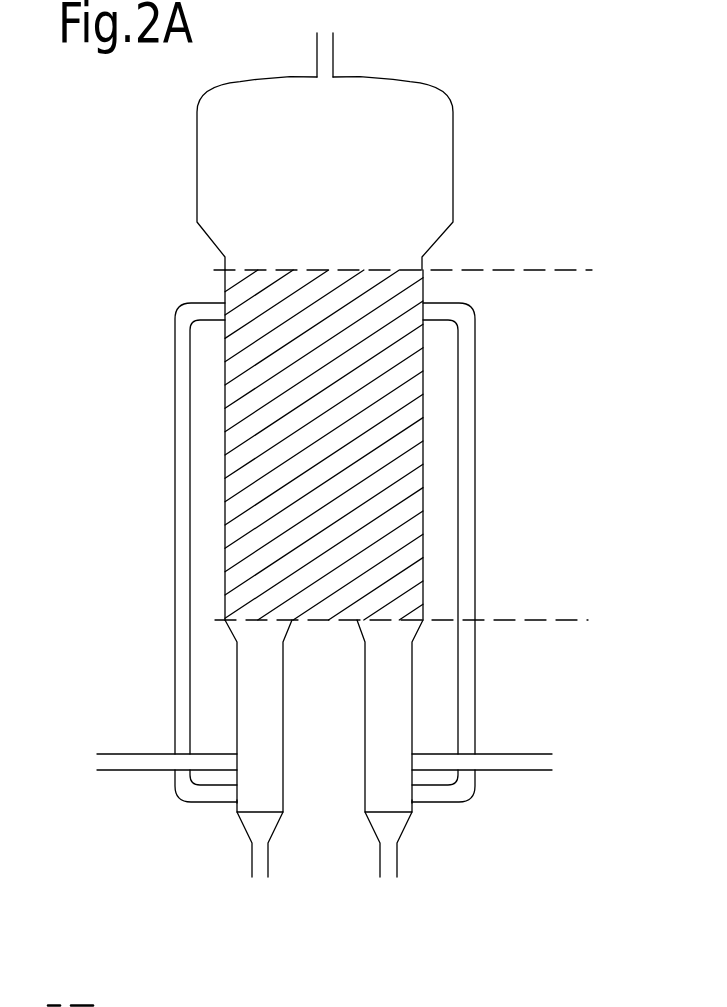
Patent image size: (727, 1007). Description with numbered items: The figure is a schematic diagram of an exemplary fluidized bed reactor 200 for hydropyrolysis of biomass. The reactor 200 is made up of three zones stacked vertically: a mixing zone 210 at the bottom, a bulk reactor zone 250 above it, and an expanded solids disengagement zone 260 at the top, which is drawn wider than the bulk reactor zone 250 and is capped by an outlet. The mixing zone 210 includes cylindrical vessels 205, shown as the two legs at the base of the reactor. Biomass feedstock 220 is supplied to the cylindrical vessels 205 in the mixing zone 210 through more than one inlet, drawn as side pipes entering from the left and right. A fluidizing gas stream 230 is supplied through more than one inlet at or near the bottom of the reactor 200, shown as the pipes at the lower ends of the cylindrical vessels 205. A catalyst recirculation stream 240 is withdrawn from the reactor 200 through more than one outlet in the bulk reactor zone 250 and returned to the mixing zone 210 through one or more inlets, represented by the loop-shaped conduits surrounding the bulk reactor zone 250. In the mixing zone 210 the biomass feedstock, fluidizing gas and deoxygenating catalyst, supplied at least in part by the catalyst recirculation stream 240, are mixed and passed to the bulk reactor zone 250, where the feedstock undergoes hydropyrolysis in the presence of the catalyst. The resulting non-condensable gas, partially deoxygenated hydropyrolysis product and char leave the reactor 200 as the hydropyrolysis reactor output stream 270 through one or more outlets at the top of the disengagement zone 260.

The fluidized bed reactor 200 is at (100, 236).
The cylindrical vessels 205 is at (382, 748).
The mixing zone 210 is at (608, 628).
The biomass feedstock 220 is at (142, 760).
The fluidizing gas stream 230 is at (252, 858).
The catalyst recirculation stream 240 is at (173, 453).
The bulk reactor zone 250 is at (598, 273).
The expanded solids disengagement zone 260 is at (388, 178).
The hydropyrolysis reactor output stream 270 is at (334, 68).